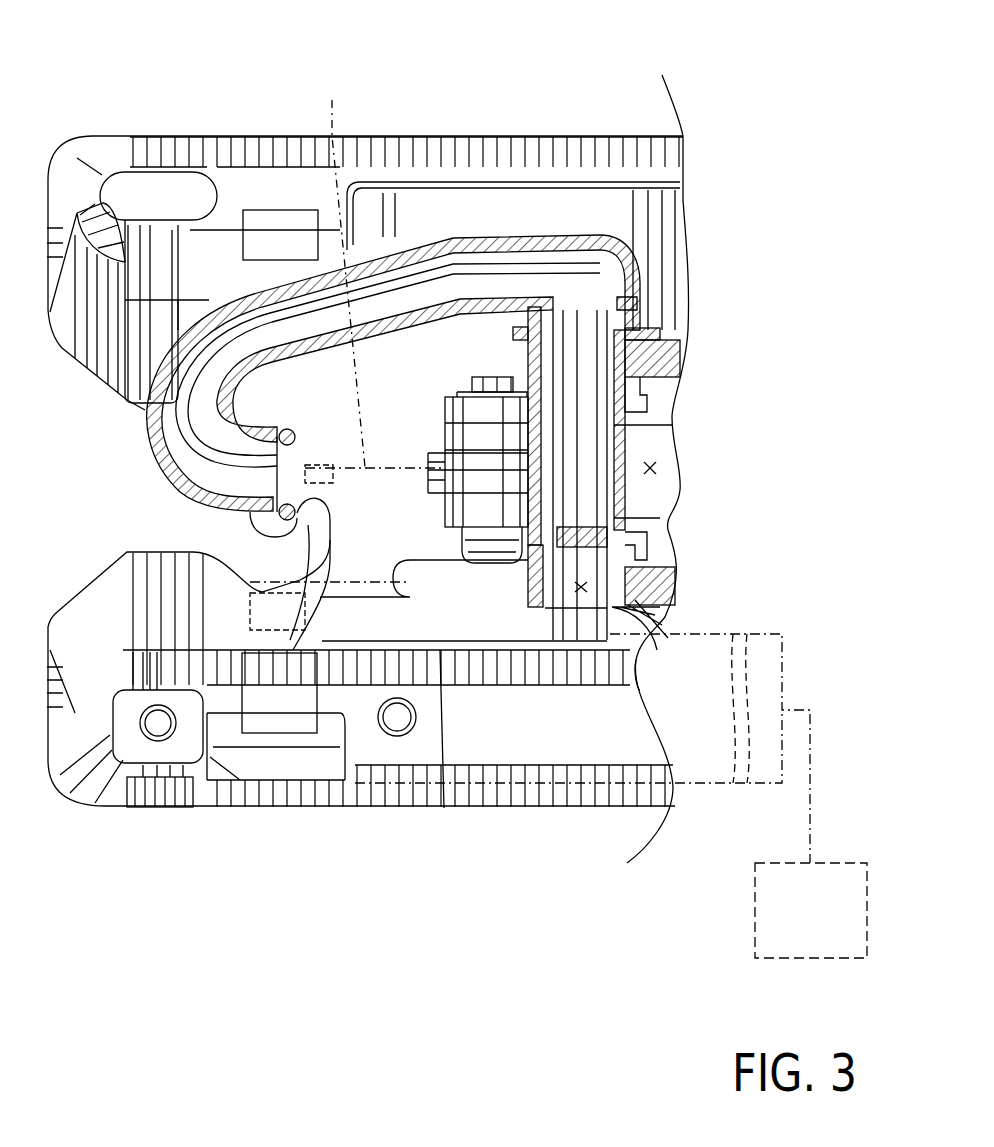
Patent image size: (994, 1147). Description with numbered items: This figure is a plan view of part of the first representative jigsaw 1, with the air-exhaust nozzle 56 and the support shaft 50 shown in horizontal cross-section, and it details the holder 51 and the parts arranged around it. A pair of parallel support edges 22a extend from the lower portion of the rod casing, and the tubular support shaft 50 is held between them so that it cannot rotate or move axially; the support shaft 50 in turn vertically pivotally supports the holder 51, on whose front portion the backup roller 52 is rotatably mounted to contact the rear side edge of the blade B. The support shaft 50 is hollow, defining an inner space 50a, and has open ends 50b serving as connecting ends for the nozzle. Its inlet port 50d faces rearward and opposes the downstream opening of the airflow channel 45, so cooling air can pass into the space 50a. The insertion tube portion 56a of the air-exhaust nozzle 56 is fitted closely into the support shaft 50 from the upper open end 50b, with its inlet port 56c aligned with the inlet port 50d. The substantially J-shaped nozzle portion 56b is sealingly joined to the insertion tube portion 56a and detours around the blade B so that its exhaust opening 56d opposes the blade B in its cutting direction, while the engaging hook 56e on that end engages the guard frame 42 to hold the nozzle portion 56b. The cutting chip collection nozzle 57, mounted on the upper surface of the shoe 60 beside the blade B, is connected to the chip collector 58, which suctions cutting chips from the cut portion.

The jigsaw 1 is at (163, 110).
The shoe 60 is at (258, 136).
The blade B is at (345, 267).
The air-exhaust nozzle 56 is at (430, 230).
The insertion tube portion 56a is at (557, 633).
The nozzle portion 56b is at (497, 236).
The inlet port 56c is at (620, 443).
The exhaust opening 56d is at (330, 520).
The engaging hook 56e is at (258, 532).
The support edges 22a is at (665, 340).
The airflow channel 45 is at (652, 468).
The support shaft 50 is at (540, 640).
The inner space 50a is at (605, 650).
The open ends 50b is at (640, 690).
The inlet port 50d is at (625, 507).
The holder 51 is at (487, 563).
The backup roller 52 is at (450, 505).
The cutting chip collection nozzle 57 is at (368, 469).
The chip collector 58 is at (770, 920).
The guard frame 42 is at (150, 438).